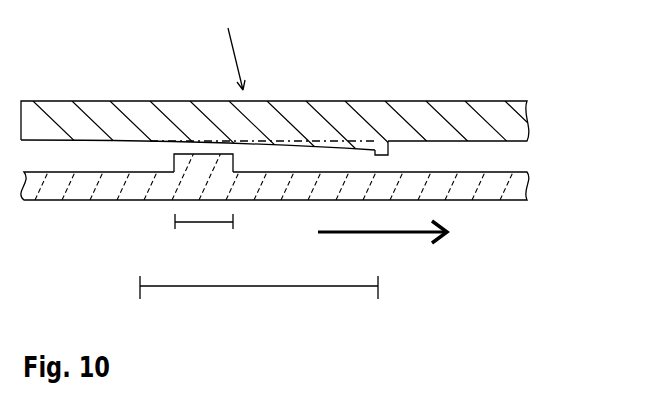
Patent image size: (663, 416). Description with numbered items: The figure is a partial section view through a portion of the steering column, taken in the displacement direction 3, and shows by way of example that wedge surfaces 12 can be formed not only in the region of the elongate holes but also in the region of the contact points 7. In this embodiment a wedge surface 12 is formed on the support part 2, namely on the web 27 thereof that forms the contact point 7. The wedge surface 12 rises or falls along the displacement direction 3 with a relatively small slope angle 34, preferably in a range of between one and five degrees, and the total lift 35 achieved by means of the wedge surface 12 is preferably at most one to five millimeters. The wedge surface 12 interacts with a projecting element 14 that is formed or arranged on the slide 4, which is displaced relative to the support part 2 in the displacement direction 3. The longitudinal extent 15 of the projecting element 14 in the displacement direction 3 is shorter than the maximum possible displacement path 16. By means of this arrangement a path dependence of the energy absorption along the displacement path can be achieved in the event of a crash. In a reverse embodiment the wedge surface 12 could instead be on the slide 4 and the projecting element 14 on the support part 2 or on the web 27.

The support part 2 is at (445, 107).
The displacement direction 3 is at (410, 233).
The slide 4 is at (498, 187).
The contact point 7 is at (234, 45).
The wedge surface 12 is at (303, 150).
The projecting element 14 is at (195, 163).
The longitudinal extent 15 is at (185, 225).
The maximum possible displacement path 16 is at (213, 288).
The web 27 is at (337, 142).
The slope angle 34 is at (215, 129).
The total lift 35 is at (392, 147).